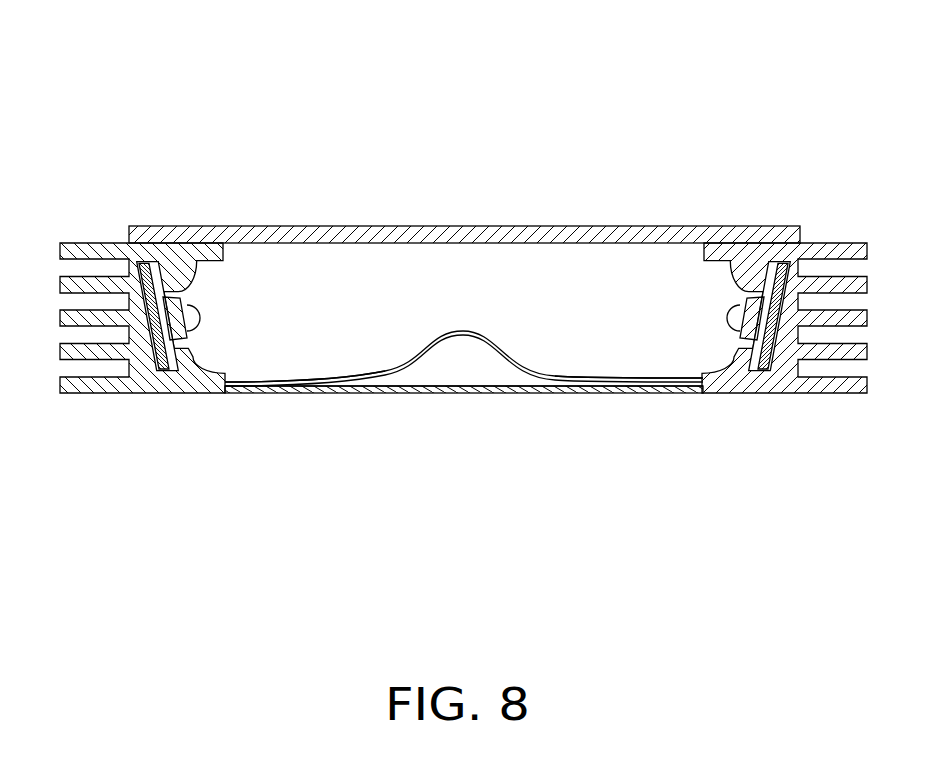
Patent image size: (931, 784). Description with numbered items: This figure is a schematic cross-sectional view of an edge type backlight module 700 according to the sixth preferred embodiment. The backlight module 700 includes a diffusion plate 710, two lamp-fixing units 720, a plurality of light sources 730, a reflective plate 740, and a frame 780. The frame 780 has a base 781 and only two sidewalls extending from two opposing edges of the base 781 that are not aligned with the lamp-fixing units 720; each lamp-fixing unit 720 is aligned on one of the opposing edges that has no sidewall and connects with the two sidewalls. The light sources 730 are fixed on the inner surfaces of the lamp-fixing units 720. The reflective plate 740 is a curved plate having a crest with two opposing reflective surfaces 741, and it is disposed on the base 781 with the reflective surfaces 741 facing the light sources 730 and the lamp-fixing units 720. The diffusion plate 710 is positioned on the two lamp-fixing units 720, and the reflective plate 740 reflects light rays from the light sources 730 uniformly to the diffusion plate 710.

The backlight module 700 is at (473, 53).
The diffusion plate 710 is at (665, 236).
The lamp-fixing unit 720 is at (88, 396).
The light source 730 is at (198, 316).
The reflective plate 740 is at (467, 331).
The reflective surface 741 is at (372, 376).
The frame 780 is at (418, 394).
The base 781 is at (507, 388).